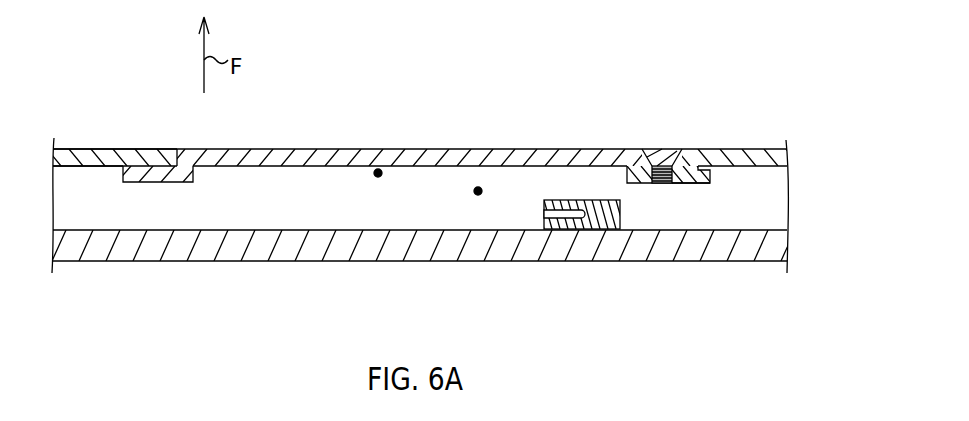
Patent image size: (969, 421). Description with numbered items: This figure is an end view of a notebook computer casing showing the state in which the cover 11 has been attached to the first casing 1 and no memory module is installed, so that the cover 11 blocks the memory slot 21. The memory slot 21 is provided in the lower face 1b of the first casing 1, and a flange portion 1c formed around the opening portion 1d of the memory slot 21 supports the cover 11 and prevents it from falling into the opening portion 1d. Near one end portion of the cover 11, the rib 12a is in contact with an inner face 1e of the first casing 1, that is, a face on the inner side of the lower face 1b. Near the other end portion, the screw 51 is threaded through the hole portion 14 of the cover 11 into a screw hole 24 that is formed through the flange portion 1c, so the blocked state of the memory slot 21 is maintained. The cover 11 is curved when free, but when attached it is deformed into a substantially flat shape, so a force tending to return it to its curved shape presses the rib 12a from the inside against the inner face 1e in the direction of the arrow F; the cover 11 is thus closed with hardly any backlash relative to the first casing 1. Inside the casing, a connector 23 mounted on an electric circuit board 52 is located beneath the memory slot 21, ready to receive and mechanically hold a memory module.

The first casing 1 is at (96, 148).
The lower face 1b is at (117, 149).
The flange portion 1c is at (683, 175).
The opening portion 1d is at (378, 169).
The inner face 1e is at (112, 167).
The cover 11 is at (253, 156).
The rib 12a is at (166, 150).
The hole portion 14 is at (688, 157).
The memory slot 21 is at (478, 187).
The connector 23 is at (602, 220).
The screw hole 24 is at (687, 182).
The screw 51 is at (663, 153).
The electric circuit board 52 is at (352, 245).